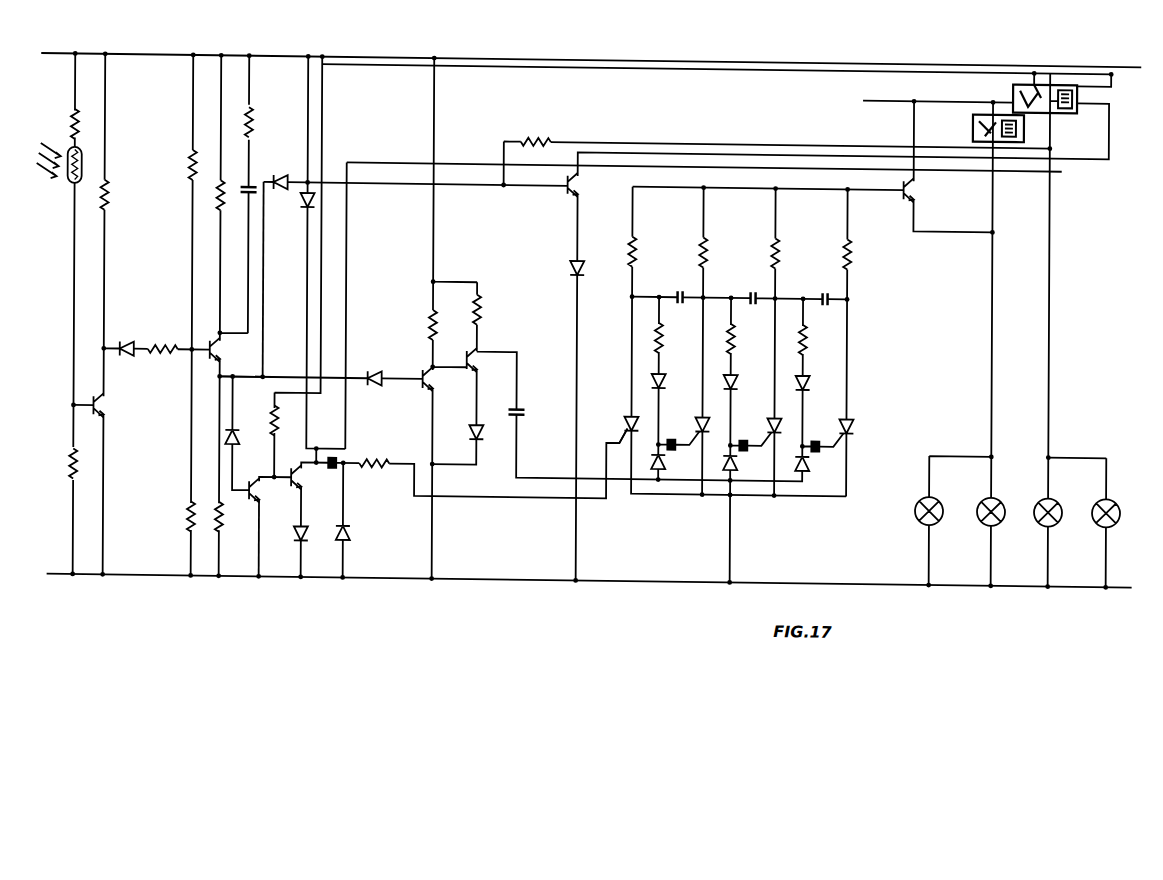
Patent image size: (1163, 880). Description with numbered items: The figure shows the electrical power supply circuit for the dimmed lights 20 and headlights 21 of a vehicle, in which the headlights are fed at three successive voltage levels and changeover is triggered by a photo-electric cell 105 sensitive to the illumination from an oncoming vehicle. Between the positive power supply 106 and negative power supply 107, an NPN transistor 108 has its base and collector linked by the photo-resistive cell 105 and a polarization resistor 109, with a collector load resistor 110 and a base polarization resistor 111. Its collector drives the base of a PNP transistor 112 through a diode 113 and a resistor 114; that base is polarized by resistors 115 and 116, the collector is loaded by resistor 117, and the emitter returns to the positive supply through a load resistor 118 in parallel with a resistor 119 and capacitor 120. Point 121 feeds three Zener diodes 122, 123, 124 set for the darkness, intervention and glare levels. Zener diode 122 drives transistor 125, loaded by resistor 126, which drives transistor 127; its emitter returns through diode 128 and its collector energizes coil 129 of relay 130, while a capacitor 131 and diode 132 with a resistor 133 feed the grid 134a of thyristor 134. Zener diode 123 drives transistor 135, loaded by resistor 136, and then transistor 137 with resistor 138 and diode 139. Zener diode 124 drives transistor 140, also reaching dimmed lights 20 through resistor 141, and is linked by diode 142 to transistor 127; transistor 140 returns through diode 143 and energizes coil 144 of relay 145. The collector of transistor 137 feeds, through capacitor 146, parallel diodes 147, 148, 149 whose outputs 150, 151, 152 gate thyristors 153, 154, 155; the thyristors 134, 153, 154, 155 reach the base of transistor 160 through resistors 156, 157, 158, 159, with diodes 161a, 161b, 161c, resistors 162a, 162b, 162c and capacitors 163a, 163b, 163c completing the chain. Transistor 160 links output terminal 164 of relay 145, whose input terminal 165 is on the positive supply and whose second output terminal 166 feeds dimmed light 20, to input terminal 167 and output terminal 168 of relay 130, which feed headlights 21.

The dimmed lights 20 is at (1051, 526).
The headlights 21 is at (925, 523).
The photo-electric cell 105 is at (81, 177).
The positive power supply 106 is at (386, 55).
The negative power supply 107 is at (503, 583).
The NPN transistor 108 is at (99, 409).
The polarization resistor 109 is at (72, 125).
The collector load resistor 110 is at (112, 194).
The base polarization resistor 111 is at (77, 476).
The PNP transistor 112 is at (216, 352).
The diode 113 is at (130, 341).
The resistor 114 is at (164, 348).
The polarization resistor 115 is at (190, 170).
The polarization resistor 116 is at (190, 510).
The collector load resistor 117 is at (222, 533).
The load resistor 118 is at (220, 187).
The resistor 119 is at (249, 120).
The capacitor 120 is at (249, 192).
The point 121 is at (256, 365).
The Zener diode 122 is at (237, 435).
The Zener diode 123 is at (380, 388).
The Zener diode 124 is at (280, 193).
The transistor 125 is at (262, 499).
The resistor 126 is at (275, 437).
The transistor 127 is at (302, 484).
The diode 128 is at (309, 538).
The coil 129 is at (1012, 131).
The relay 130 is at (972, 112).
The capacitor 131 is at (338, 463).
The diode 132 is at (350, 528).
The resistor 133 is at (372, 472).
The thyristor 134 is at (629, 418).
The grid 134a is at (627, 436).
The transistor 135 is at (431, 386).
The resistor 136 is at (430, 322).
The transistor 137 is at (476, 364).
The resistor 138 is at (481, 309).
The diode 139 is at (469, 436).
The transistor 140 is at (578, 186).
The resistor 141 is at (526, 139).
The diode 142 is at (314, 206).
The diode 143 is at (575, 262).
The coil 144 is at (1075, 77).
The relay 145 is at (1060, 78).
The capacitor 146 is at (518, 409).
The diode 147 is at (674, 466).
The diode 148 is at (746, 467).
The diode 149 is at (818, 467).
The output of diode 150 is at (672, 439).
The output of diode 151 is at (744, 439).
The output of diode 152 is at (816, 440).
The thyristor 153 is at (715, 418).
The thyristor 154 is at (787, 417).
The thyristor 155 is at (849, 414).
The resistor 156 is at (636, 262).
The resistor 157 is at (707, 261).
The resistor 158 is at (779, 260).
The resistor 159 is at (850, 259).
The transistor 160 is at (910, 186).
The diode 161a is at (665, 385).
The diode 161b is at (737, 384).
The diode 161c is at (809, 383).
The resistor 162a is at (663, 327).
The resistor 162b is at (735, 326).
The resistor 162c is at (807, 325).
The capacitor 163a is at (678, 293).
The capacitor 163b is at (751, 292).
The capacitor 163c is at (823, 291).
The output terminal 164 is at (1027, 86).
The input terminal 165 is at (1040, 76).
The second output terminal 166 is at (1050, 97).
The input terminal 167 is at (986, 113).
The output terminal 168 is at (972, 130).